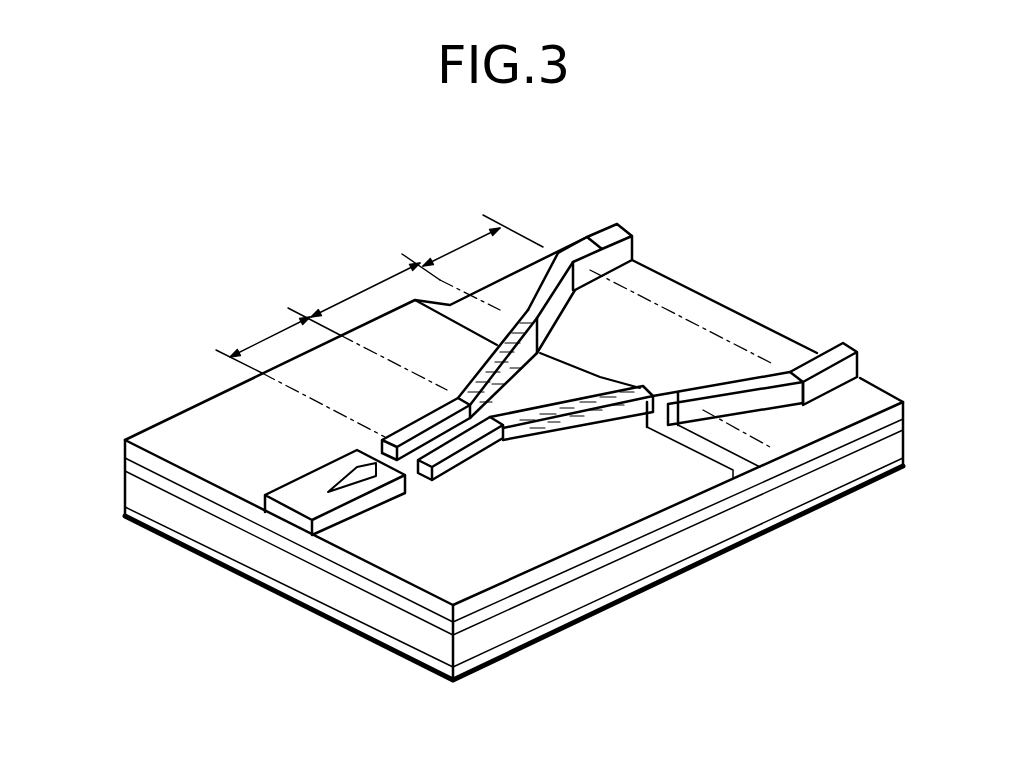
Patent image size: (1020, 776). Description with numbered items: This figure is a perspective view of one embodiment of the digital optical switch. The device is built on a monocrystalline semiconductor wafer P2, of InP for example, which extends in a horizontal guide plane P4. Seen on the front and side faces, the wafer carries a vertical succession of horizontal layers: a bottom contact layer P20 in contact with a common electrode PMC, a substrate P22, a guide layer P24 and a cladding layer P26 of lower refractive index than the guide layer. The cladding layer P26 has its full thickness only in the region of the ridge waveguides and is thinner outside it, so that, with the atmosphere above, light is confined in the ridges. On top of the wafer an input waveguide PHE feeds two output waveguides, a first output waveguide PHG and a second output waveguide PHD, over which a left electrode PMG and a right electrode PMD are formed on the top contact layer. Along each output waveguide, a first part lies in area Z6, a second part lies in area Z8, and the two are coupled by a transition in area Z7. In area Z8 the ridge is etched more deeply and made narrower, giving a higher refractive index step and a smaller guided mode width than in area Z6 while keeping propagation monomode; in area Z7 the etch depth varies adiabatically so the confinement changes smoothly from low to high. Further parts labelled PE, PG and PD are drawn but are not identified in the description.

The monocrystalline semiconductor wafer P2 is at (123, 496).
The guide plane P4 is at (168, 440).
The input waveguide section PE is at (292, 523).
The input waveguide PHE is at (287, 483).
The first output optical waveguide PHG is at (413, 420).
The second output optical waveguide PHD is at (437, 481).
The left electrode PMG is at (485, 367).
The right electrode PMD is at (571, 404).
The left output waveguide PG is at (630, 245).
The right output waveguide PD is at (860, 360).
The bottom contact layer P20 is at (555, 623).
The substrate P22 is at (620, 573).
The guide layer P24 is at (677, 520).
The cladding layer P26 is at (728, 487).
The common electrode PMC is at (490, 667).
The first-part area Z6 is at (331, 368).
The transition area Z7 is at (405, 284).
The second-part area Z8 is at (599, 328).